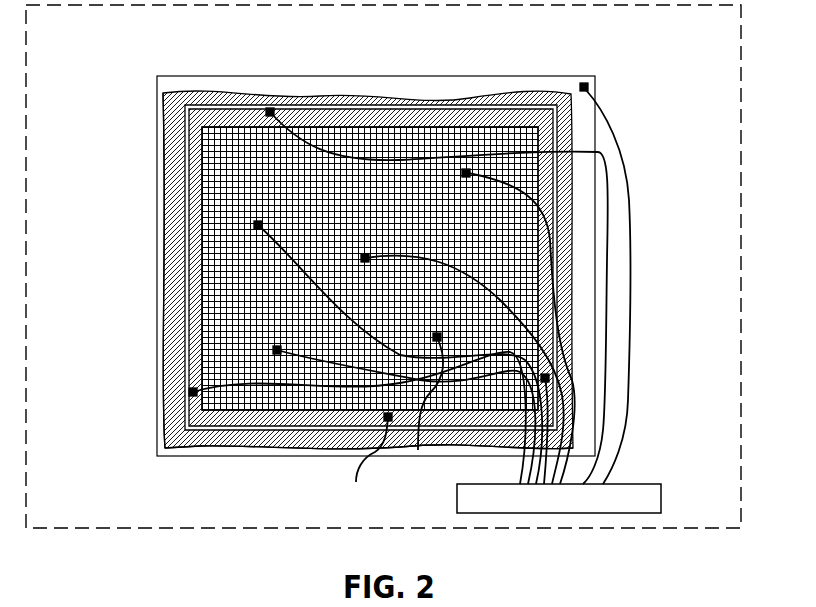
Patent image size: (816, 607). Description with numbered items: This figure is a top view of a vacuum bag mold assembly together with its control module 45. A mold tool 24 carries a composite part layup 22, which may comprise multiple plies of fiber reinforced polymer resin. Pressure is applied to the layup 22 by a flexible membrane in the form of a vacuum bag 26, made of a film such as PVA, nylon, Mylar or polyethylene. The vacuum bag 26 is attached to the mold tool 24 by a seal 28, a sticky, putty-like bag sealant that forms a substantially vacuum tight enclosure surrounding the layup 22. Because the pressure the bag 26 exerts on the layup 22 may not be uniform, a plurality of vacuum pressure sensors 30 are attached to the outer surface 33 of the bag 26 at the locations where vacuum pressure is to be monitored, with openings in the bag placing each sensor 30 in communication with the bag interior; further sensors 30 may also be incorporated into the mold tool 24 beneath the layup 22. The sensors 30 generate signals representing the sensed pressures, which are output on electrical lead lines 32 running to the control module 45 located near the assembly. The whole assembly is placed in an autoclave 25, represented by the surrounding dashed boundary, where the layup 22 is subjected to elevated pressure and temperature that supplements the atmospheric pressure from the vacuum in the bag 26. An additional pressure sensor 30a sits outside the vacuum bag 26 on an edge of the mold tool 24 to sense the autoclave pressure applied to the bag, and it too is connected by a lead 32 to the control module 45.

The composite part layup 22 is at (402, 147).
The mold tool 24 is at (162, 446).
The autoclave 25 is at (82, 528).
The vacuum bag 26 is at (174, 297).
The seal 28 is at (185, 187).
The vacuum pressure sensors 30 is at (270, 112).
The pressure sensor 30a is at (590, 87).
The electrical lead lines 32 is at (641, 264).
The outer surface 33 is at (163, 90).
The control module 45 is at (642, 484).